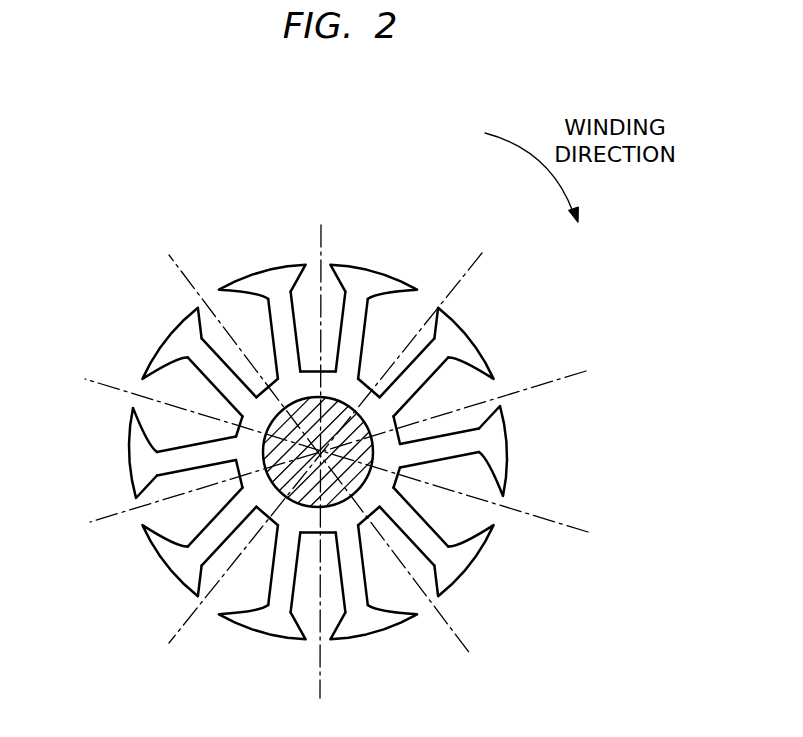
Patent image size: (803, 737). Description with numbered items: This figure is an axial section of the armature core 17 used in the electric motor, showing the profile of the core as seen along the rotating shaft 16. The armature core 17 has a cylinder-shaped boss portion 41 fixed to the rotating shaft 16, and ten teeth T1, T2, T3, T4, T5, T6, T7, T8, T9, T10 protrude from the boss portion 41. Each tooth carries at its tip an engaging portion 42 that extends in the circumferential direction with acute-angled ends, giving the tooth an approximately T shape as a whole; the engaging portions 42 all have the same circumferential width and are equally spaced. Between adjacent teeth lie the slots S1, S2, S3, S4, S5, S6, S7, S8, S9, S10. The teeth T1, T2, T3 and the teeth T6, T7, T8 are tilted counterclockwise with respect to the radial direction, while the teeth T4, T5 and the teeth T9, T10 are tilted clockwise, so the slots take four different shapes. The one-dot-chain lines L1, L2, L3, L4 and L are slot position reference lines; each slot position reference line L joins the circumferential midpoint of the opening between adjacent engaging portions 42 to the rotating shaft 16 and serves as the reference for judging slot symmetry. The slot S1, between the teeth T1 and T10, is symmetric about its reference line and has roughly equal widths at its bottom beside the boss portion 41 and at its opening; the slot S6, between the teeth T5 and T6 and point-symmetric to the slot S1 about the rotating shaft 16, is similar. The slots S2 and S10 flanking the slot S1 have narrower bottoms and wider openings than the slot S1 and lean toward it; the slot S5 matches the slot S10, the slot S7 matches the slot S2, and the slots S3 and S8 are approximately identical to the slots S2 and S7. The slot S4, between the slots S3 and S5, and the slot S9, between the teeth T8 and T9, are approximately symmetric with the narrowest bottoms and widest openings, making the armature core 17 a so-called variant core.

The rotating shaft 16 is at (278, 458).
The armature core 17 is at (502, 472).
The boss portion 41 is at (378, 575).
The engaging portion 42 is at (324, 457).
The tooth T1 is at (400, 287).
The tooth T2 is at (484, 368).
The tooth T3 is at (501, 451).
The tooth T4 is at (452, 585).
The tooth T5 is at (391, 625).
The tooth T6 is at (283, 632).
The tooth T7 is at (180, 580).
The tooth T8 is at (136, 480).
The tooth T9 is at (170, 345).
The tooth T10 is at (292, 266).
The slot S1 is at (313, 283).
The slot S2 is at (415, 305).
The slot S3 is at (477, 390).
The slot S4 is at (482, 512).
The slot S5 is at (410, 598).
The slot S6 is at (312, 617).
The slot S7 is at (222, 598).
The slot S8 is at (152, 508).
The slot S9 is at (150, 408).
The slot S10 is at (233, 305).
The reference line L1 is at (322, 222).
The reference line L2 is at (494, 248).
The reference line L3 is at (593, 372).
The reference line L4 is at (597, 530).
The slot position reference line L is at (489, 676).